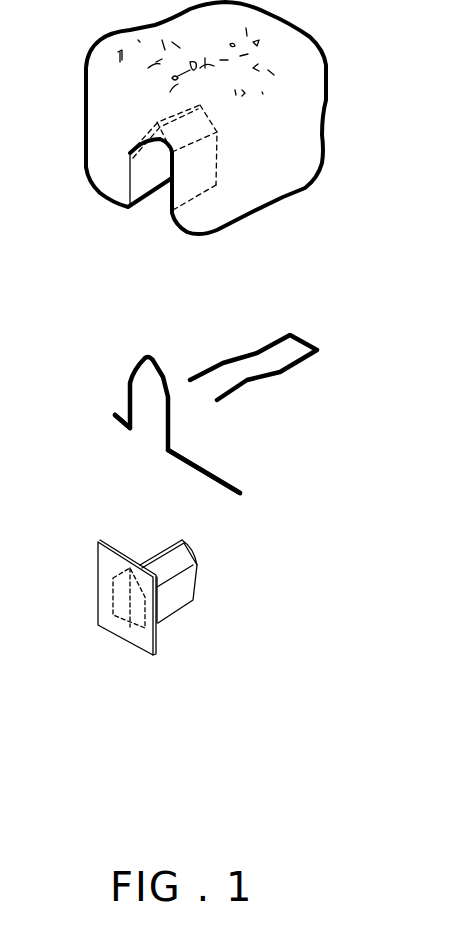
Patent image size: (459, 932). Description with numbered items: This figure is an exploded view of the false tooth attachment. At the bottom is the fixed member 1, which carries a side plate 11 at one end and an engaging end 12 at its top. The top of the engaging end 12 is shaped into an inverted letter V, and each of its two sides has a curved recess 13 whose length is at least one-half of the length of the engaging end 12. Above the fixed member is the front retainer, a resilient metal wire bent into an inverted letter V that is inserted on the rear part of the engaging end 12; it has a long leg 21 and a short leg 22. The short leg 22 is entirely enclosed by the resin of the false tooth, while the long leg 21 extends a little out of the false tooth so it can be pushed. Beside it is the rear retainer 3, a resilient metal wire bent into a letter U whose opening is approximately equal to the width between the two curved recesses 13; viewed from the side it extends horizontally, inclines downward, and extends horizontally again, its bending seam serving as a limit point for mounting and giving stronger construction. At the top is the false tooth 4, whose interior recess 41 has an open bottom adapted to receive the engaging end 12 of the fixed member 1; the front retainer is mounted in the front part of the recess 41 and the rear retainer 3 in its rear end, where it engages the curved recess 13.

The fixed member 1 is at (143, 601).
The side plate 11 is at (102, 595).
The engaging end 12 is at (165, 562).
The curved recess 13 is at (193, 590).
The rear retainer 3 is at (313, 332).
The false tooth 4 is at (307, 127).
The recess 41 is at (140, 172).
The long leg 21 is at (197, 457).
The short leg 22 is at (115, 427).